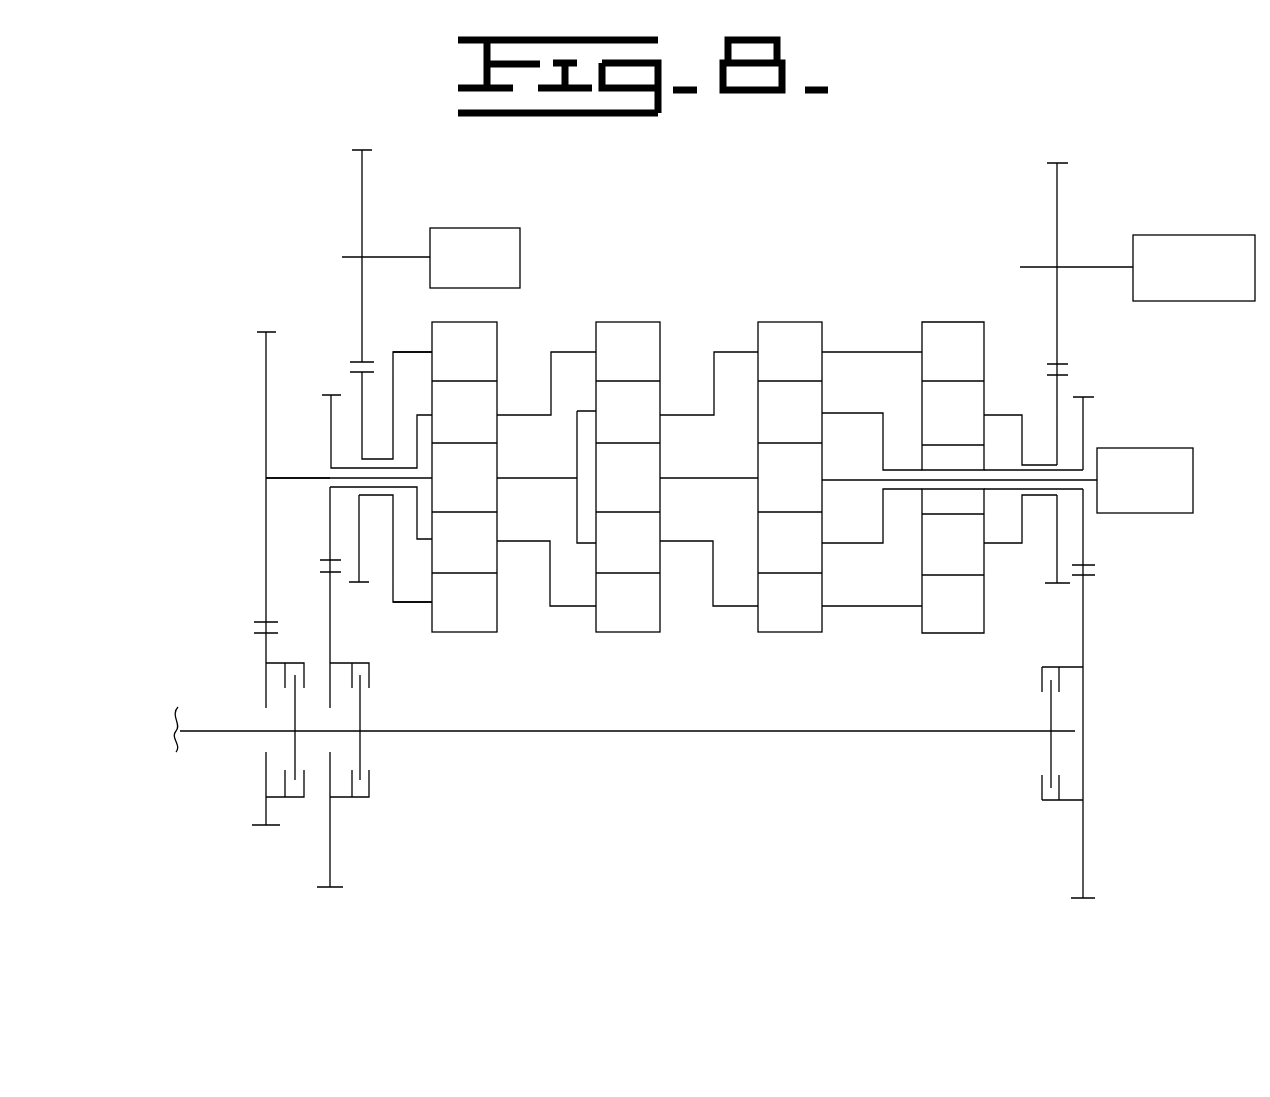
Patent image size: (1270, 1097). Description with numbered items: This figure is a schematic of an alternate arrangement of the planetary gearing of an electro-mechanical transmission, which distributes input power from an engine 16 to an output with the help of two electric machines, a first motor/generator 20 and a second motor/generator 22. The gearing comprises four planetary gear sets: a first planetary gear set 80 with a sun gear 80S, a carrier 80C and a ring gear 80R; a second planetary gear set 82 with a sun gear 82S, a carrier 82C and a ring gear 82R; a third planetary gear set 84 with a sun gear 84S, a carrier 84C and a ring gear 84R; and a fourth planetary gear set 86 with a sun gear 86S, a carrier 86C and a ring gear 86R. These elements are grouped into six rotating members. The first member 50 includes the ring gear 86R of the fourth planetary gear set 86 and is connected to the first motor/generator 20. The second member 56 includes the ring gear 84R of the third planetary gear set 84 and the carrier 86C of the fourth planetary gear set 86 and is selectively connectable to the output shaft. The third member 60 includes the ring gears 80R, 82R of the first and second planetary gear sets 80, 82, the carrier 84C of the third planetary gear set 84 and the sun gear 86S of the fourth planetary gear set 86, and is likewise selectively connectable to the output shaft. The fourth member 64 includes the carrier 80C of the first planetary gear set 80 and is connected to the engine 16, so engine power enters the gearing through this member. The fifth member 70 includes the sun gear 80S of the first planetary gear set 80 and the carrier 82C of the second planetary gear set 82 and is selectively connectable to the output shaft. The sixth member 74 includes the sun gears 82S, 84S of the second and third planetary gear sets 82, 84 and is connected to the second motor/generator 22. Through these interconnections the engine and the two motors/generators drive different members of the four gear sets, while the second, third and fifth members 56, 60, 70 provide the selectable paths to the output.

The engine 16 is at (1212, 235).
The first motor/generator 20 is at (518, 228).
The second motor/generator 22 is at (1183, 448).
The shaft 50 is at (416, 350).
The second member 56 is at (575, 352).
The third member 60 is at (322, 480).
The fourth member 64 is at (992, 413).
The fifth member 70 is at (1065, 470).
The sixth member 74 is at (1086, 489).
The first planetary gear set 80 is at (947, 653).
The sun gear 80S is at (921, 456).
The carrier 80C is at (921, 562).
The ring gear 80R is at (921, 635).
The second planetary gear set 82 is at (783, 655).
The sun gear 82S is at (823, 478).
The carrier 82C is at (823, 543).
The ring gear 82R is at (758, 638).
The third planetary gear set 84 is at (619, 650).
The sun gear 84S is at (661, 478).
The carrier 84C is at (661, 541).
The ring gear 84R is at (660, 625).
The fourth planetary gear set 86 is at (459, 650).
The sun gear 86S is at (498, 478).
The carrier 86C is at (497, 541).
The ring gear 86R is at (432, 620).